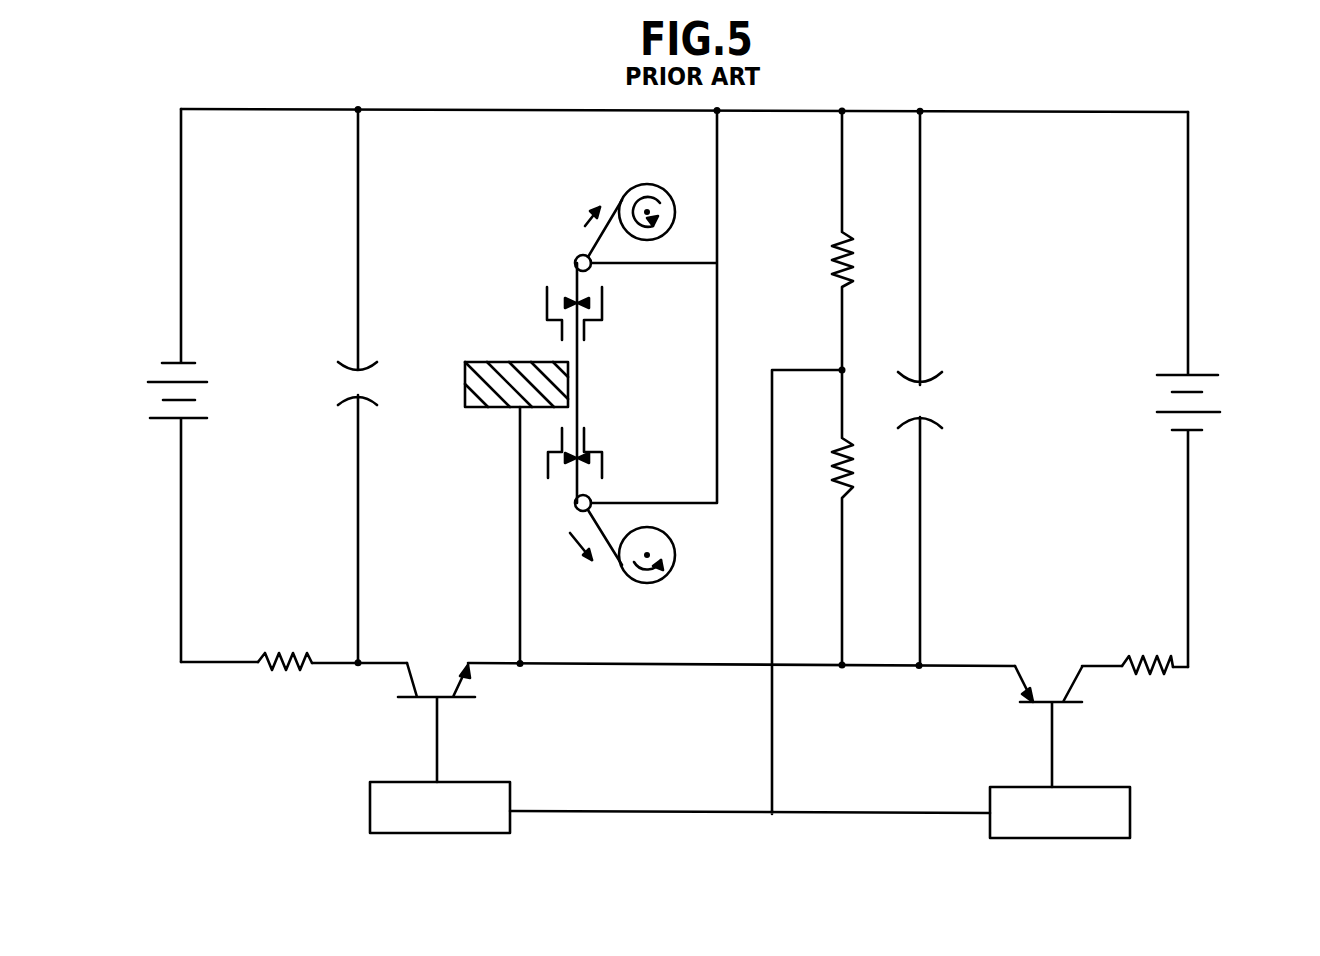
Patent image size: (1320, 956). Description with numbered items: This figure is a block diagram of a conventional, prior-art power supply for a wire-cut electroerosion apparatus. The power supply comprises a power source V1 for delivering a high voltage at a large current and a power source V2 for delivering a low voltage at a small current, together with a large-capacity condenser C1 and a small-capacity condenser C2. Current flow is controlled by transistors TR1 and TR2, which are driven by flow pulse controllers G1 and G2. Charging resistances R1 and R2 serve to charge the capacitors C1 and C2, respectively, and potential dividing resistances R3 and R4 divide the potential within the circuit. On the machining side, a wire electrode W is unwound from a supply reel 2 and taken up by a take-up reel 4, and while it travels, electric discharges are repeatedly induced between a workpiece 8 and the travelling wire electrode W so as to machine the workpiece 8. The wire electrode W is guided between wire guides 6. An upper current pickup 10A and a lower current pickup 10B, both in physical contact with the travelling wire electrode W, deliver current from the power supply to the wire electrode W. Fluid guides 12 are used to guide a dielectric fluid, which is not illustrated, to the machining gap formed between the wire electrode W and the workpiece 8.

The supply reel 2 is at (668, 204).
The take-up reel 4 is at (666, 557).
The wire electrode W is at (585, 236).
The wire guides 6 is at (572, 300).
The workpiece 8 is at (500, 408).
The upper current pickup 10A is at (592, 272).
The lower current pickup 10B is at (592, 497).
The fluid guides 12 is at (547, 311).
The power source V1 is at (170, 420).
The power source V2 is at (1222, 412).
The large-capacity condenser C1 is at (346, 408).
The small-capacity condenser C2 is at (945, 377).
The charging resistance R1 is at (280, 652).
The charging resistance R2 is at (1124, 660).
The potential dividing resistance R3 is at (832, 266).
The potential dividing resistance R4 is at (836, 458).
The transistor TR1 is at (420, 699).
The transistor TR2 is at (1073, 708).
The flow pulse controller G1 is at (370, 824).
The flow pulse controller G2 is at (1130, 818).